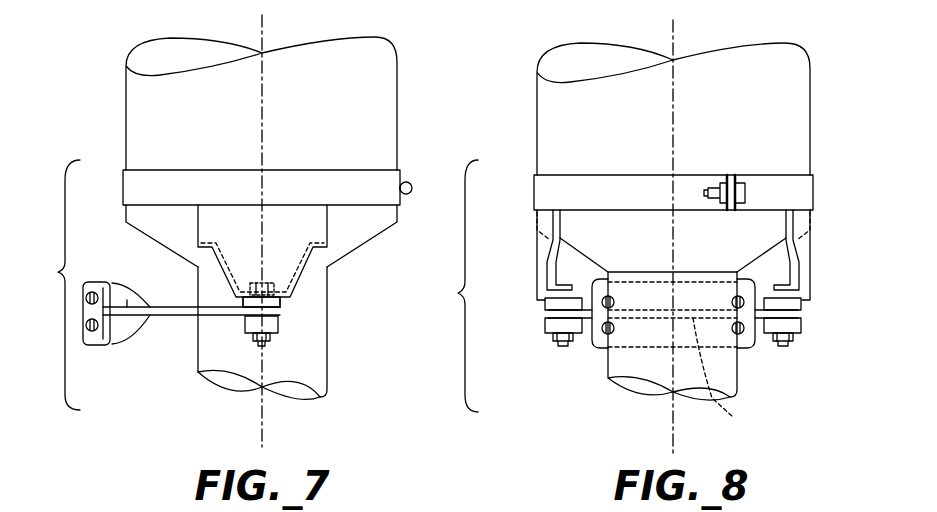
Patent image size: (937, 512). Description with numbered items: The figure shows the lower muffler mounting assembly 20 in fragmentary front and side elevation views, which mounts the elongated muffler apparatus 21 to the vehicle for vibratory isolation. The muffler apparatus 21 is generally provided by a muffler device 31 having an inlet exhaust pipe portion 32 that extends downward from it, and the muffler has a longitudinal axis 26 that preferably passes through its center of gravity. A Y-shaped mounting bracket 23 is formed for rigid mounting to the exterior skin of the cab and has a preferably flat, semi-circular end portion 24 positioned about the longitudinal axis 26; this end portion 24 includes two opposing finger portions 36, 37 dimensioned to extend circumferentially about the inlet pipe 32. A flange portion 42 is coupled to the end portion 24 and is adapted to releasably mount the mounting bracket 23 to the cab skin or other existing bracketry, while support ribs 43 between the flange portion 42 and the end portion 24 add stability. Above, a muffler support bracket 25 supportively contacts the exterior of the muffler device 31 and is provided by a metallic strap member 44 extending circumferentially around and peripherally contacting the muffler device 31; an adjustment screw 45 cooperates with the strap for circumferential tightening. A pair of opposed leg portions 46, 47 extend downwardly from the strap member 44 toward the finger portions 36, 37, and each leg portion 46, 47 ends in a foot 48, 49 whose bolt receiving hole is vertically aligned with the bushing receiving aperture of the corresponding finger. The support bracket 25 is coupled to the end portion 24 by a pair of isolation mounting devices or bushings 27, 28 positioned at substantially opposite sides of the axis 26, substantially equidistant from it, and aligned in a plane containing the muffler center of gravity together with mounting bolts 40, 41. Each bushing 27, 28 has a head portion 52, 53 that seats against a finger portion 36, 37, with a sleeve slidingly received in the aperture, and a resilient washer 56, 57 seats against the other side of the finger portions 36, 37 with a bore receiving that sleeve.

In FIG. 7, the lower muffler mounting assembly 20 is at (51, 285).
In FIG. 8, the lower muffler mounting assembly 20 is at (452, 286).
In FIG. 7, the muffler apparatus 21 is at (333, 384).
In FIG. 8, the muffler apparatus 21 is at (535, 86).
In FIG. 7, the mounting bracket 23 is at (128, 330).
In FIG. 7, the end portion 24 is at (188, 318).
In FIG. 8, the end portion 24 is at (673, 370).
In FIG. 7, the muffler support bracket 25 is at (118, 147).
In FIG. 7, the longitudinal axis 26 is at (270, 38).
In FIG. 8, the longitudinal axis 26 is at (680, 46).
In FIG. 8, the isolation mounting device 27 is at (811, 312).
In FIG. 7, the isolation mounting device 28 is at (228, 299).
In FIG. 8, the isolation mounting device 28 is at (530, 326).
In FIG. 7, the muffler device 31 is at (398, 85).
In FIG. 8, the muffler device 31 is at (812, 82).
In FIG. 7, the inlet exhaust pipe portion 32 is at (198, 372).
In FIG. 8, the inlet exhaust pipe portion 32 is at (608, 378).
In FIG. 8, the finger portion 36 is at (802, 327).
In FIG. 7, the finger portion 37 is at (282, 311).
In FIG. 8, the finger portion 37 is at (543, 313).
In FIG. 8, the mounting bolt 40 is at (784, 347).
In FIG. 7, the mounting bolt 41 is at (300, 287).
In FIG. 8, the mounting bolt 41 is at (563, 347).
In FIG. 7, the flange portion 42 is at (108, 283).
In FIG. 8, the flange portion 42 is at (752, 350).
In FIG. 7, the support rib 43 is at (130, 300).
In FIG. 7, the strap member 44 is at (316, 168).
In FIG. 8, the strap member 44 is at (673, 192).
In FIG. 7, the adjustment screw 45 is at (405, 180).
In FIG. 8, the adjustment screw 45 is at (731, 176).
In FIG. 8, the leg portion 46 is at (812, 252).
In FIG. 7, the leg portion 47 is at (327, 217).
In FIG. 8, the leg portion 47 is at (537, 250).
In FIG. 8, the foot 48 is at (775, 288).
In FIG. 7, the foot 49 is at (243, 288).
In FIG. 8, the foot 49 is at (577, 288).
In FIG. 8, the head portion 52 is at (803, 300).
In FIG. 7, the head portion 53 is at (283, 300).
In FIG. 8, the head portion 53 is at (543, 300).
In FIG. 8, the resilient washer 56 is at (798, 335).
In FIG. 7, the resilient washer 57 is at (283, 326).
In FIG. 8, the resilient washer 57 is at (548, 335).